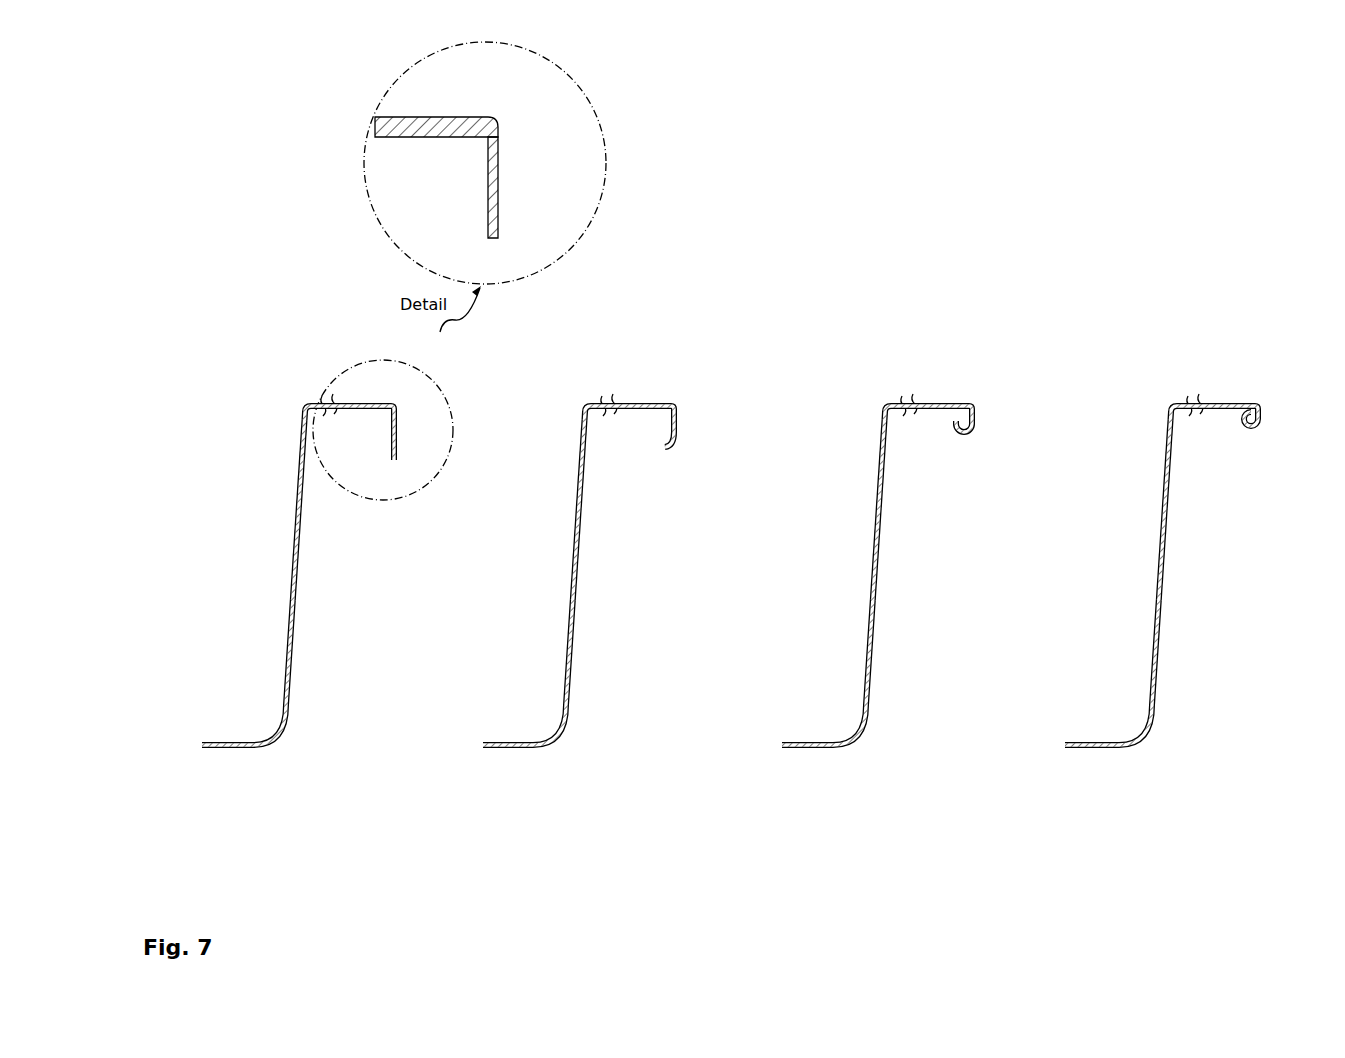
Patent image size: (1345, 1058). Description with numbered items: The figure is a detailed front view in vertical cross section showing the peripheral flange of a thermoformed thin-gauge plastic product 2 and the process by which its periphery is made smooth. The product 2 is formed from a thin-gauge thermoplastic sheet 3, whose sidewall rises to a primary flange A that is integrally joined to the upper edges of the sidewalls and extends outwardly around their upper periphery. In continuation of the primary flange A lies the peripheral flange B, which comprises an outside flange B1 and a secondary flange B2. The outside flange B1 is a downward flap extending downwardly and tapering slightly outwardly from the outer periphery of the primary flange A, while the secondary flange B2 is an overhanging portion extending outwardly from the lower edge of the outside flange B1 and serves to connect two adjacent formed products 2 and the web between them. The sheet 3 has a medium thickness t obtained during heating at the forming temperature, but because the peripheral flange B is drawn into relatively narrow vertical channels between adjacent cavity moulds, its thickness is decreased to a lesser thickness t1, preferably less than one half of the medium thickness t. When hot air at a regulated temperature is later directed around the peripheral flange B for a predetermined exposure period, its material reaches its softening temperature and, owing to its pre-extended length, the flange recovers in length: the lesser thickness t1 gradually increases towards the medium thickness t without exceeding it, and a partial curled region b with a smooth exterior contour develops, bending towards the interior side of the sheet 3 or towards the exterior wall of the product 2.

The thermoformed plastic product 2 is at (257, 658).
The thermoplastic sheet 3 is at (300, 525).
The primary flange A is at (432, 120).
The peripheral flange B is at (497, 357).
The outside flange B1 is at (497, 158).
The secondary flange B2 is at (499, 235).
The medium thickness t is at (262, 503).
The lesser thickness t1 is at (455, 180).
The partial curled region b is at (962, 438).